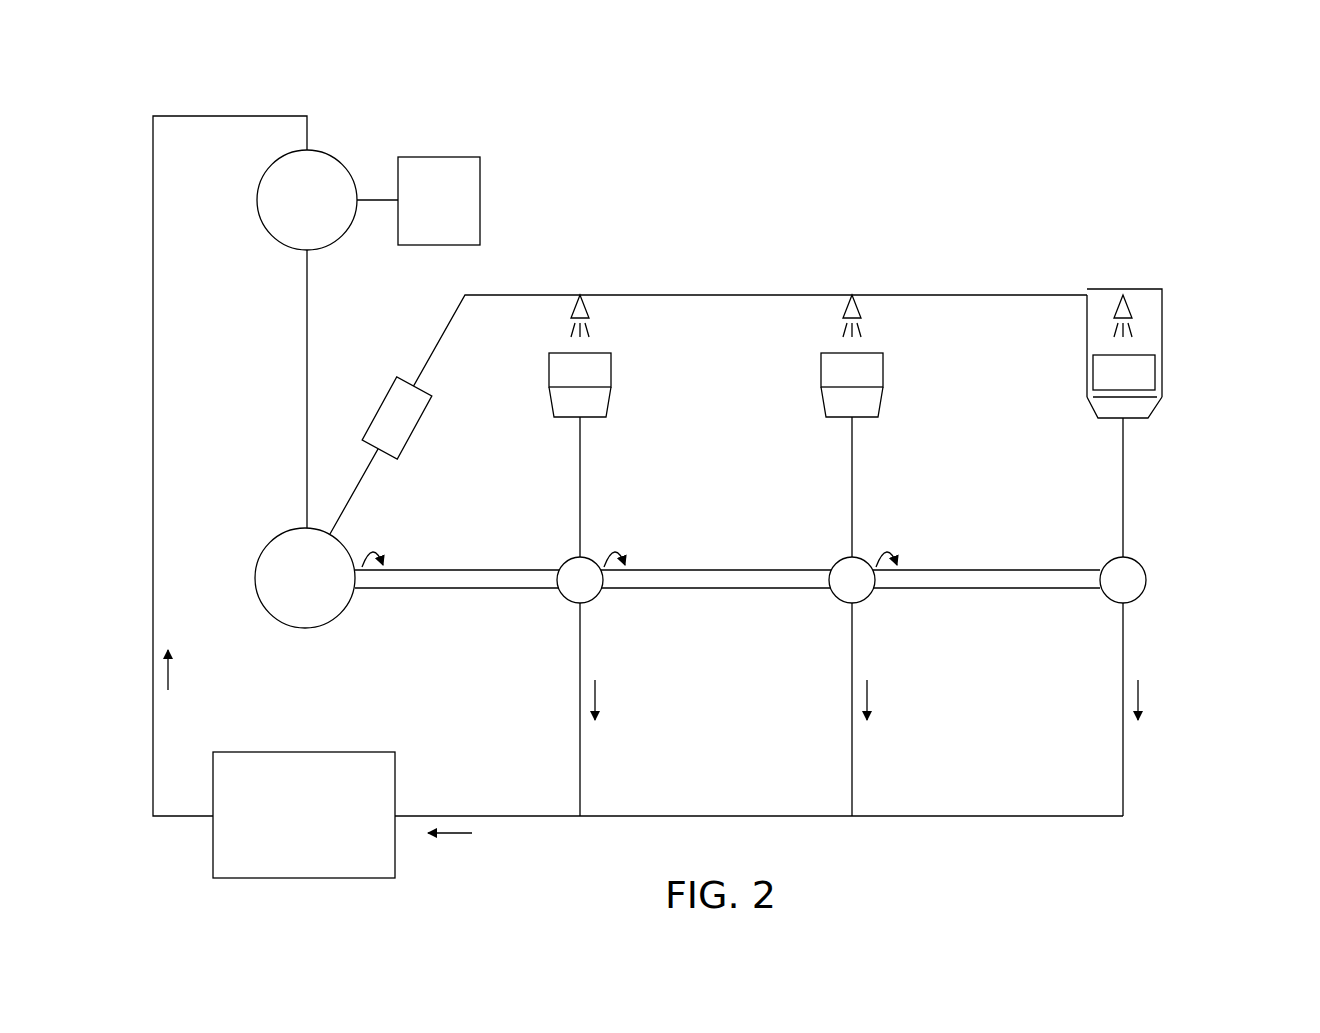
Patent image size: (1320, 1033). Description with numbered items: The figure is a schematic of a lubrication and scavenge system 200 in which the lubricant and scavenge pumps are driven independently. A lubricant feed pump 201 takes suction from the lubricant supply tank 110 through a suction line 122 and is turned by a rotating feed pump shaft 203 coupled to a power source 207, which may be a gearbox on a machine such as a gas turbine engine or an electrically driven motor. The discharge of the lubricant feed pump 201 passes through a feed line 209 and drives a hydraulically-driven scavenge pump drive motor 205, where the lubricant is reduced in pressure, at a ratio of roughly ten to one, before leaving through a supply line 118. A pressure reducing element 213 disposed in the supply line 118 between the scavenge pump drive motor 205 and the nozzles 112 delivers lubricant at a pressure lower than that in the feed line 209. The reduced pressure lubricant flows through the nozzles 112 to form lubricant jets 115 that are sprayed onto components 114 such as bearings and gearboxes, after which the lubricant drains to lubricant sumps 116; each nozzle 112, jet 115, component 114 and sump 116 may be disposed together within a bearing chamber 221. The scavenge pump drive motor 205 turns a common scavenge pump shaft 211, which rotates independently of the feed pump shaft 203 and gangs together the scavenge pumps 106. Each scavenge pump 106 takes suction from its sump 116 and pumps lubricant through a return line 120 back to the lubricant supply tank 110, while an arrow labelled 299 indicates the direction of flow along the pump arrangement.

The lubrication and scavenge system 200 is at (1204, 118).
The suction line 122 is at (151, 615).
The lubricant feed pump 201 is at (324, 211).
The feed pump shaft 203 is at (372, 198).
The power source 207 is at (454, 211).
The feed line 209 is at (305, 398).
The scavenge pump drive motor 205 is at (322, 589).
The supply line 118 is at (510, 297).
The pressure reducing element 213 is at (414, 429).
The nozzle 112 is at (586, 308).
The lubricant jet 115 is at (598, 325).
The component 114 is at (597, 382).
The lubricant sump 116 is at (597, 414).
The bearing chamber 221 is at (1163, 344).
The scavenge pump shaft 211 is at (452, 592).
The scavenge pump 106 is at (596, 590).
The direction indicator 299 is at (1166, 551).
The lubricant supply tank 110 is at (320, 824).
The return line 120 is at (550, 818).